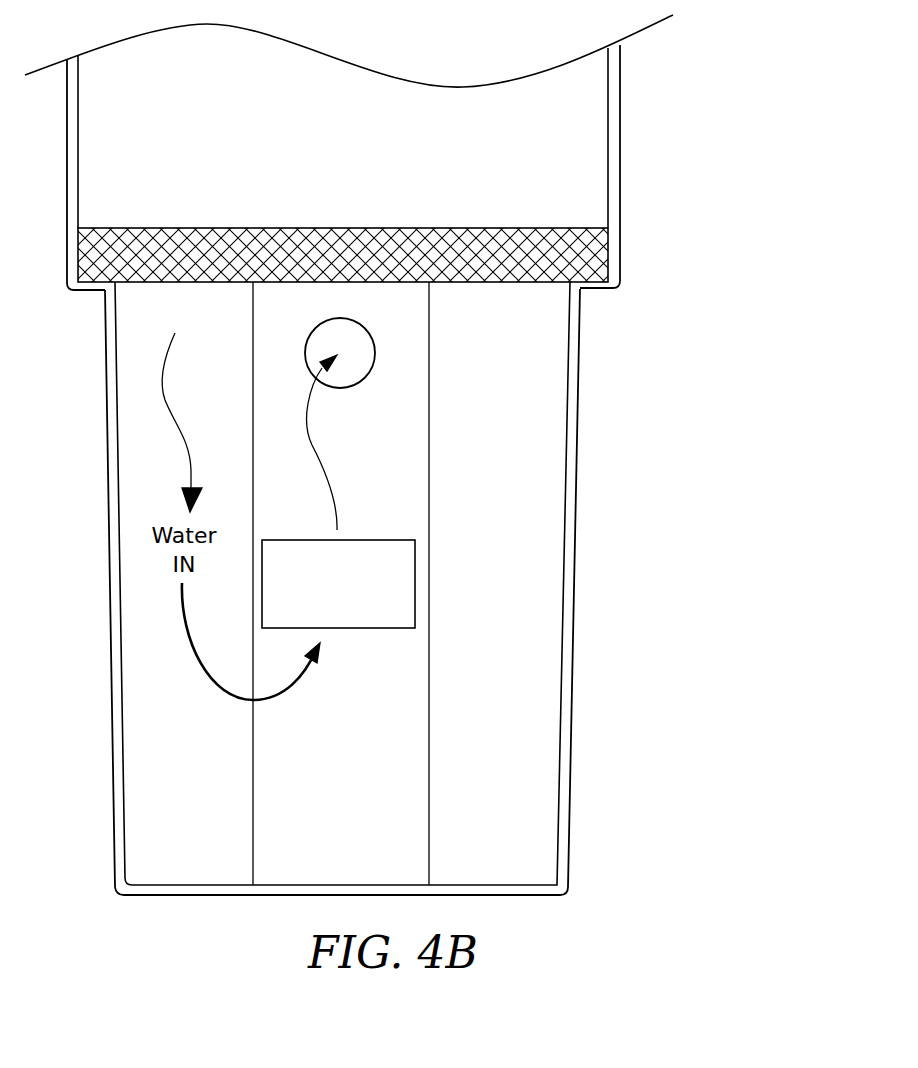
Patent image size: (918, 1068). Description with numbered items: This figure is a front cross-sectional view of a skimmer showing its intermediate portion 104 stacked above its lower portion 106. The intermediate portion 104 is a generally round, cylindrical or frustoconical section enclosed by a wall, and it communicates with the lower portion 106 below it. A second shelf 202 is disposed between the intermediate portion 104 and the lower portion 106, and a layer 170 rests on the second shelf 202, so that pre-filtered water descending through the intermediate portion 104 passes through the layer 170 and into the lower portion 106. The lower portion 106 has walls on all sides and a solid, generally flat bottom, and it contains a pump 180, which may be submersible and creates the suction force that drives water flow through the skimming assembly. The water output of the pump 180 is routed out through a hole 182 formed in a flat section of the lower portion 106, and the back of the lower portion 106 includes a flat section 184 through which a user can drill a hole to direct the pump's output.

The intermediate portion 104 is at (670, 174).
The layer 170 is at (580, 255).
The second shelf 202 is at (596, 293).
The lower portion 106 is at (650, 583).
The pump 180 is at (415, 583).
The hole 182 is at (375, 350).
The flat section 184 is at (363, 745).